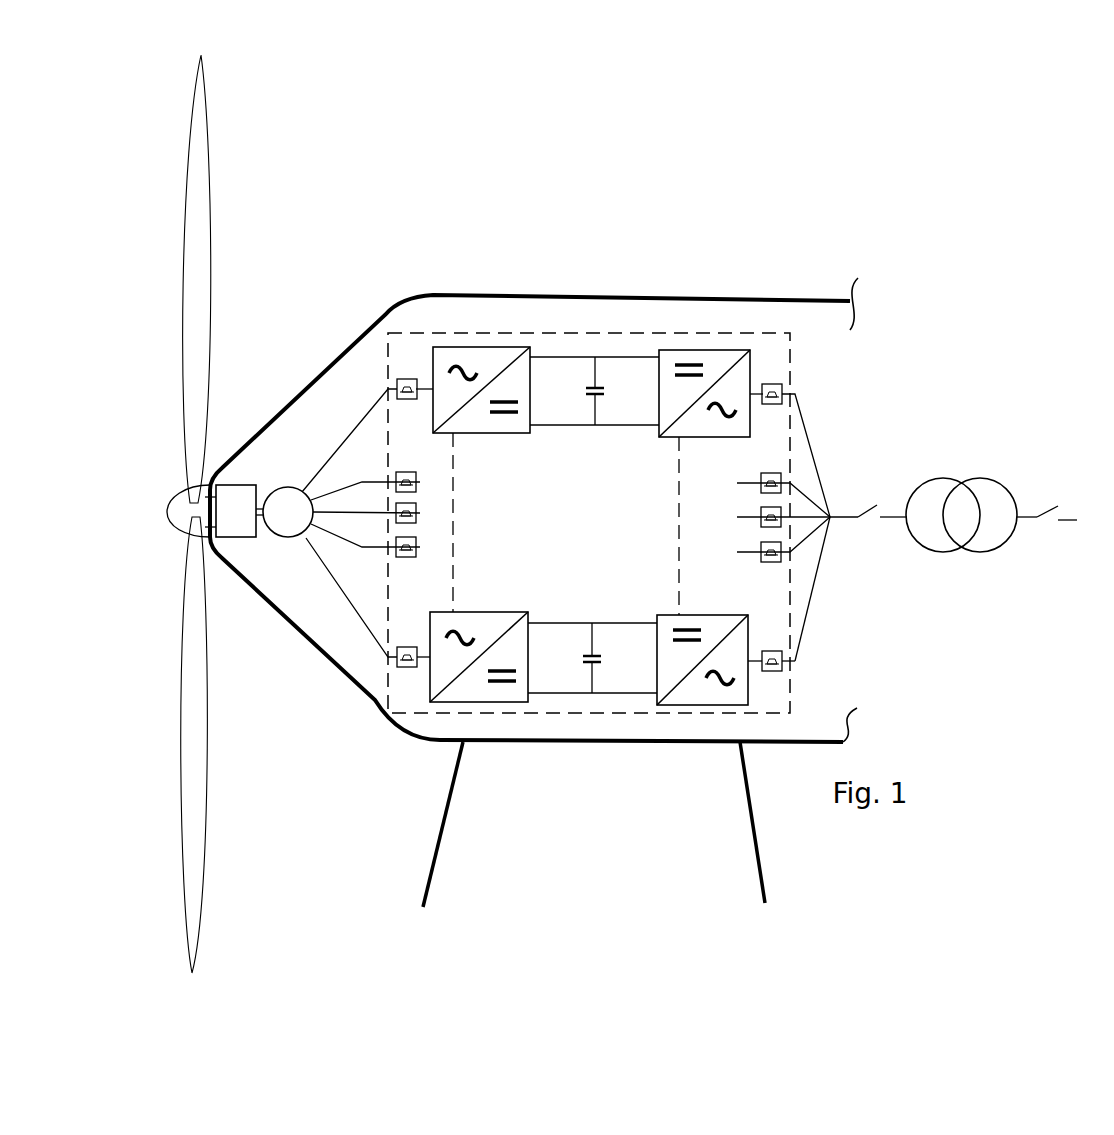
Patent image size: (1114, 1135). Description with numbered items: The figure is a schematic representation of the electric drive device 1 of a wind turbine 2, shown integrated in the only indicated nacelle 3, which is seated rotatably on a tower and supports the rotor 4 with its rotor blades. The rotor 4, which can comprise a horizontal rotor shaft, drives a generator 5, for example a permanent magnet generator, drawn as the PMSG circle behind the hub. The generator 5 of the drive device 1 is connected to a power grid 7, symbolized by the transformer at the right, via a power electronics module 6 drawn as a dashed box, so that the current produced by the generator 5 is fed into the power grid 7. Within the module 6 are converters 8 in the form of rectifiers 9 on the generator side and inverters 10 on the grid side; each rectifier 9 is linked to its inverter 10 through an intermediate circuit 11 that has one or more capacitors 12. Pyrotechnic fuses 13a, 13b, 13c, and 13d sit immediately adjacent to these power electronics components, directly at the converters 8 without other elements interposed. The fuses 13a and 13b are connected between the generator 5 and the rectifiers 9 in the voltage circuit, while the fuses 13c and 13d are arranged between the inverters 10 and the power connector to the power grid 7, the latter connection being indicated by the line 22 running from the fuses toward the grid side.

The electric drive device 1 is at (315, 412).
The wind turbine 2 is at (150, 532).
The nacelle 3 is at (390, 312).
The rotor 4 is at (180, 423).
The generator 5 is at (287, 542).
The power electronics module 6 is at (759, 334).
The power grid 7 is at (1030, 537).
The converters 8 is at (456, 340).
The rectifiers 9 is at (497, 347).
The inverters 10 is at (700, 350).
The intermediate circuit 11 is at (575, 345).
The capacitors 12 is at (605, 402).
The pyrotechnic fuse 13a is at (402, 382).
The pyrotechnic fuse 13b is at (400, 672).
The pyrotechnic fuse 13c is at (779, 382).
The pyrotechnic fuse 13d is at (779, 677).
The grid connection line 22 is at (815, 605).